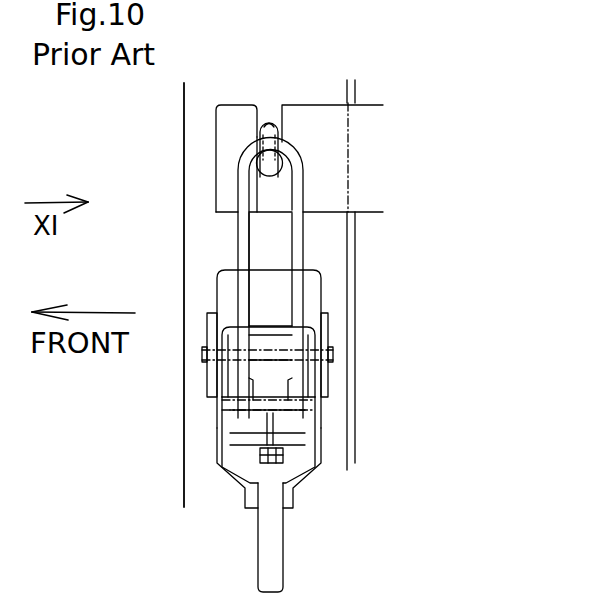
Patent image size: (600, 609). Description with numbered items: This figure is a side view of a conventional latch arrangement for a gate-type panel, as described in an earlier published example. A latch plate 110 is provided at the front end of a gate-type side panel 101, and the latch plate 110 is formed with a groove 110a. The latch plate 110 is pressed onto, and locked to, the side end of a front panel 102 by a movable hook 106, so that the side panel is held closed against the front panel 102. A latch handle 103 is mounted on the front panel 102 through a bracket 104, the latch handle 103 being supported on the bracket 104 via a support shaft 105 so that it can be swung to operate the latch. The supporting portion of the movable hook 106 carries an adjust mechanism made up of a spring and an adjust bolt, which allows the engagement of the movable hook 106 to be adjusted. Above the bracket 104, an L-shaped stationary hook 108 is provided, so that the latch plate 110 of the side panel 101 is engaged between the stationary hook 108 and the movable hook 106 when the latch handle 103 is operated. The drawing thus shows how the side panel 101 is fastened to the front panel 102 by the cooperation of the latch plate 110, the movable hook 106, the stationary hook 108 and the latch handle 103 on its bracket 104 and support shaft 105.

The gate-type side panel 101 is at (380, 254).
The front panel 102 is at (205, 262).
The latch handle 103 is at (268, 538).
The bracket 104 is at (328, 380).
The support shaft 105 is at (333, 356).
The movable hook 106 is at (300, 238).
The stationary hook 108 is at (258, 157).
The latch plate 110 is at (320, 165).
The groove 110a is at (263, 127).